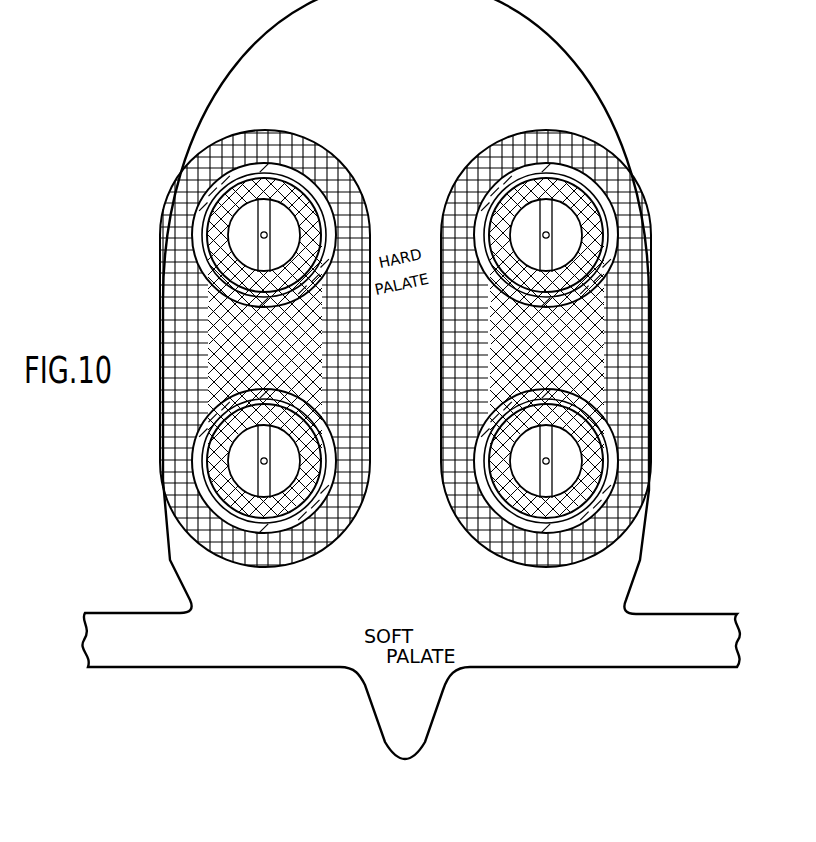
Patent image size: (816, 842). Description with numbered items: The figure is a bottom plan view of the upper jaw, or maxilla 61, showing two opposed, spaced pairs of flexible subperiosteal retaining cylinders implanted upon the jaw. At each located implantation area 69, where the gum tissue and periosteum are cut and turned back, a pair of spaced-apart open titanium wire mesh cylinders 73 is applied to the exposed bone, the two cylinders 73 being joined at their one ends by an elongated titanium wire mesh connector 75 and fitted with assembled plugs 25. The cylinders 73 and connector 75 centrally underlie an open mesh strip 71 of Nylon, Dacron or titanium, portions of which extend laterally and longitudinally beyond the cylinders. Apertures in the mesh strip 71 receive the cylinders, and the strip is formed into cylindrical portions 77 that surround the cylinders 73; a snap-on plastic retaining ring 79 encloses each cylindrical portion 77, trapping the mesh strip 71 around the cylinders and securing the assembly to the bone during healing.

The maxilla 61 is at (175, 117).
The approximate areas for implantation 69 is at (218, 143).
The open mesh strip 71 is at (170, 214).
The cylinders 73 is at (268, 182).
The wire mesh connector 75 is at (325, 346).
The cylindrical portions 77 is at (323, 227).
The snap on retaining ring 79 is at (307, 167).
The plugs 25 is at (283, 220).